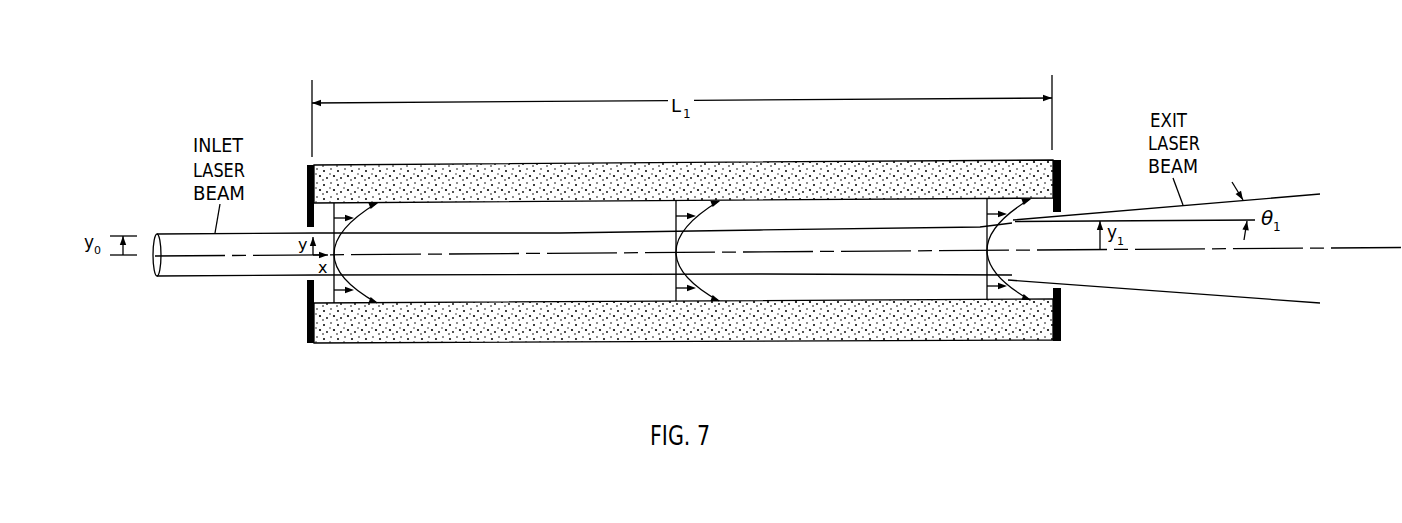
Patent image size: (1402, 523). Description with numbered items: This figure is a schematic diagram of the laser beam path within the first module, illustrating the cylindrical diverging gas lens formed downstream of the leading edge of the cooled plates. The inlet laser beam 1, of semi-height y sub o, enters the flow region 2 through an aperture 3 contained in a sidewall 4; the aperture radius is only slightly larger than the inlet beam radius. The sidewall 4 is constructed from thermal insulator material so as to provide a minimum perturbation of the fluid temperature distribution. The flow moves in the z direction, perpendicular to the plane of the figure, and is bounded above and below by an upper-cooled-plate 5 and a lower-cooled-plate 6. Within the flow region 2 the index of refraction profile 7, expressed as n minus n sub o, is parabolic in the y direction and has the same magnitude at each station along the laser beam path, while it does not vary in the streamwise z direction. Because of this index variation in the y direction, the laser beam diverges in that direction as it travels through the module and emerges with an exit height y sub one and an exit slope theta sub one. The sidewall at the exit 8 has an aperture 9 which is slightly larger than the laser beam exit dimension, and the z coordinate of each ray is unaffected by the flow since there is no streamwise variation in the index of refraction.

The inlet laser beam 1 is at (233, 210).
The flow region 2 is at (663, 241).
The aperture 3 is at (302, 278).
The sidewall 4 is at (310, 313).
The upper-cooled-plate 5 is at (492, 165).
The lower-cooled-plate 6 is at (602, 342).
The index of refraction profile 7 is at (355, 305).
The sidewall at the exit 8 is at (1062, 320).
The aperture 9 is at (1067, 288).